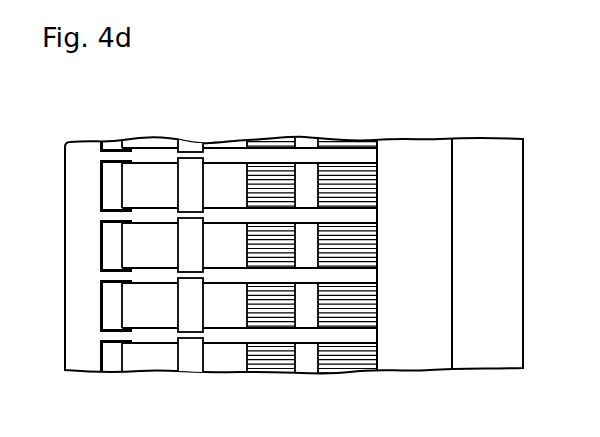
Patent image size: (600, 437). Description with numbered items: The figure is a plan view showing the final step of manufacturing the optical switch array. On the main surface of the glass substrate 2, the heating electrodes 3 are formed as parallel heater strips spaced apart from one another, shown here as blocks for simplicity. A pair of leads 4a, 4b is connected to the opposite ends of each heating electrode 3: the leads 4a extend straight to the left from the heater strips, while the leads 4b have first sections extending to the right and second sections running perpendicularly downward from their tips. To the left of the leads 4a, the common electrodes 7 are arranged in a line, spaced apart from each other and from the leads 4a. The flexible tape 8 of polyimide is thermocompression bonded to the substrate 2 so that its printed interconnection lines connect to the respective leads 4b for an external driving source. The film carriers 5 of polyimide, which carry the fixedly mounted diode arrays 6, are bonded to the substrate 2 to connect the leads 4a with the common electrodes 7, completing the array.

The substrate 2 is at (482, 168).
The heating electrodes 3 is at (310, 188).
The leads 4a is at (275, 164).
The leads 4b is at (352, 163).
The film carriers 5 is at (148, 175).
The diode arrays 6 is at (183, 178).
The common electrodes 7 is at (103, 180).
The flexible tape 8 is at (418, 162).